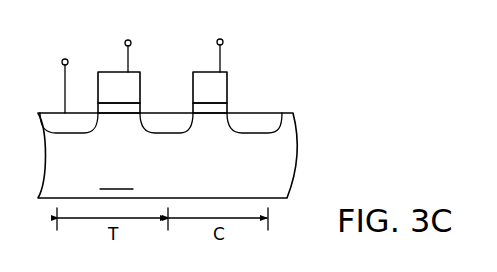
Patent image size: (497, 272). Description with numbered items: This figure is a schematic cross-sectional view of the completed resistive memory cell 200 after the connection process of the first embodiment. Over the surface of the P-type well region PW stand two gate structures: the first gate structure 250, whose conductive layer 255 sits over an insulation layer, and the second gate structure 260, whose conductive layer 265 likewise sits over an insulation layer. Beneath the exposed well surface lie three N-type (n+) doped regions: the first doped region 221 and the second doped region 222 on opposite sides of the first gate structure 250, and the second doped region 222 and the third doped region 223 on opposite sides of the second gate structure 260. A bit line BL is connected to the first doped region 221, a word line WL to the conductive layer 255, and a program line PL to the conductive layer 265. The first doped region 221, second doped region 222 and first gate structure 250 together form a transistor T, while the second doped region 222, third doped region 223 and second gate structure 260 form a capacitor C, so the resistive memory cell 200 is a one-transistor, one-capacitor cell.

The resistive memory cell 200 is at (291, 41).
The first doped region 221 is at (80, 134).
The second doped region 222 is at (153, 134).
The third doped region 223 is at (258, 134).
The first gate structure 250 is at (133, 81).
The conductive layer 255 is at (109, 72).
The second gate structure 260 is at (223, 80).
The conductive layer 265 is at (203, 72).